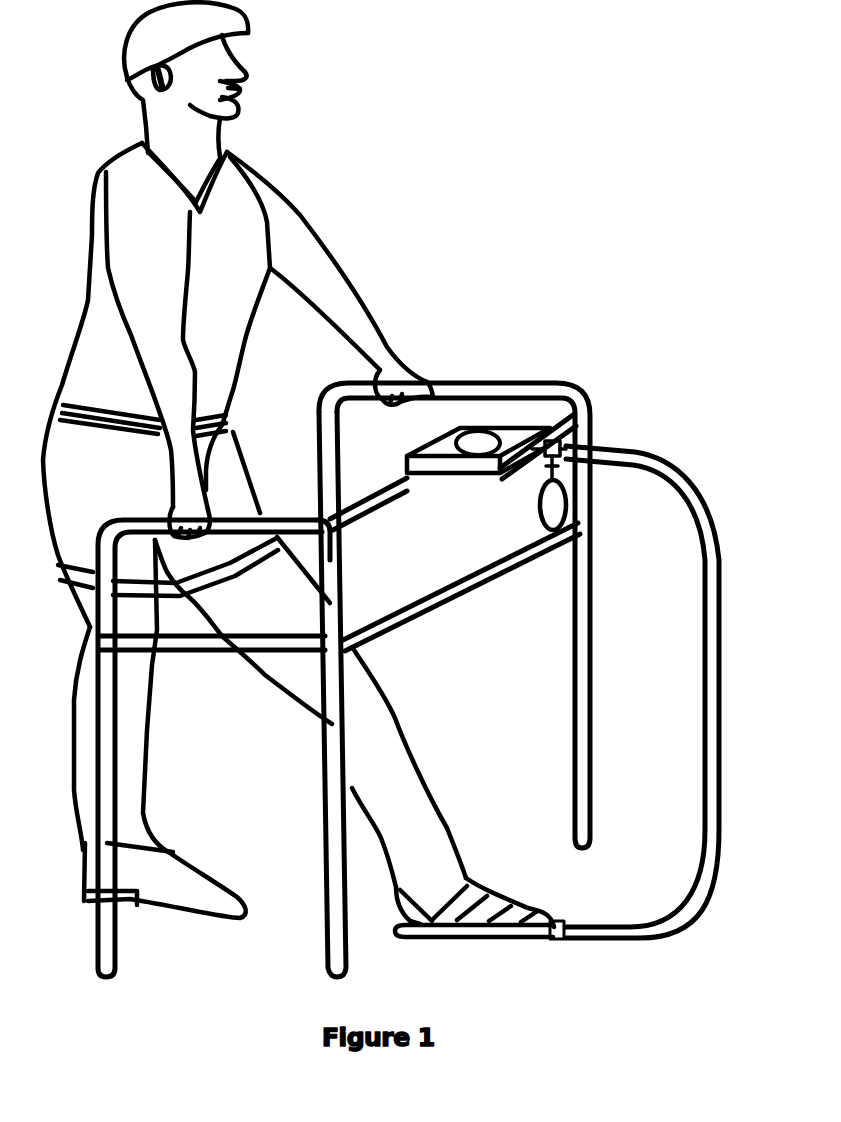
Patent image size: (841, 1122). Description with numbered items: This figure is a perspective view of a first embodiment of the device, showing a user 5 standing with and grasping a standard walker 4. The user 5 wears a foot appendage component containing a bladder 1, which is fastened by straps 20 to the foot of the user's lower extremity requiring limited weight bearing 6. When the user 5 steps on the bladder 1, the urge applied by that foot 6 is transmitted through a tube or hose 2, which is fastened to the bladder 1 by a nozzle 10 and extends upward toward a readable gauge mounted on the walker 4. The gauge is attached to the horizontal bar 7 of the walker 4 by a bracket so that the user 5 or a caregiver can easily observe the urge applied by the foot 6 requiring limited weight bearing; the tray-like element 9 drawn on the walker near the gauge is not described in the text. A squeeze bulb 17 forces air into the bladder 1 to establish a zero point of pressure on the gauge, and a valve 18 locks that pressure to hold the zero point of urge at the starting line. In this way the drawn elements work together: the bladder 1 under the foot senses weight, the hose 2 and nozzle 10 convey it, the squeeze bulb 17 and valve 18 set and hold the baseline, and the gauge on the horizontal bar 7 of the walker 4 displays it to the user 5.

The bladder 1 is at (521, 936).
The tube or hose 2 is at (728, 643).
The walker 4 is at (566, 617).
The user 5 is at (298, 198).
The lower extremity requiring limited weight bearing 6 is at (417, 758).
The horizontal bar 7 is at (408, 512).
The tray 9 is at (440, 436).
The nozzle 10 is at (563, 922).
The squeeze bulb 17 is at (531, 515).
The valve 18 is at (531, 477).
The straps 20 is at (514, 897).